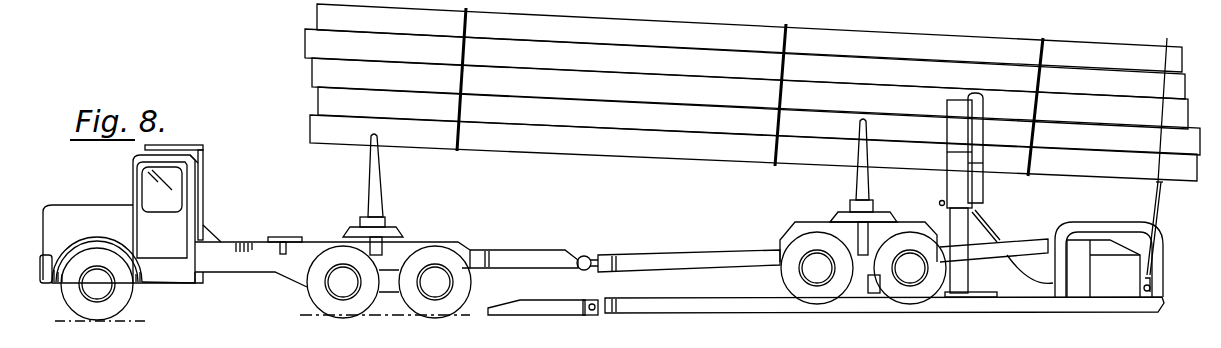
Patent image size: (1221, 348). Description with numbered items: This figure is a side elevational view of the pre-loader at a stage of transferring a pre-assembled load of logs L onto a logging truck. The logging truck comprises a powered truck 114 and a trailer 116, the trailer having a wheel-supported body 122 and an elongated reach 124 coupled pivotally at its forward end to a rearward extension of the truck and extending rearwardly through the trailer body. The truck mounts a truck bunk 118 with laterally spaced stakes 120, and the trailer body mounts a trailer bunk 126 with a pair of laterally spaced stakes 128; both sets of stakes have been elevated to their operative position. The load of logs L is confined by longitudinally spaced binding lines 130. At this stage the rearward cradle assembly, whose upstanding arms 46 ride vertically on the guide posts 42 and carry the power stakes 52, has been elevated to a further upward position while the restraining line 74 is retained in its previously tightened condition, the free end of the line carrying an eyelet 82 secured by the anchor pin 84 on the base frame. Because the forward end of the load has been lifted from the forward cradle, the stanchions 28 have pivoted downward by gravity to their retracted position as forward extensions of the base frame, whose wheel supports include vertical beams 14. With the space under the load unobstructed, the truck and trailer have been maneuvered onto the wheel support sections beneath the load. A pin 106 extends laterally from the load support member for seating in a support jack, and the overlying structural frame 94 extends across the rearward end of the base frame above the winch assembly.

The load of logs L is at (975, 73).
The powered truck 114 is at (234, 208).
The truck bunk 118 is at (350, 228).
The stakes 120 is at (383, 180).
The reach 124 is at (672, 262).
The stanchions 28 is at (558, 302).
The vertical beams 14 is at (690, 301).
The binding lines 130 is at (775, 165).
The trailer 116 is at (762, 225).
The wheel-supported body 122 is at (780, 238).
The trailer bunk 126 is at (838, 215).
The stakes 128 is at (858, 180).
The pin 106 is at (942, 204).
The upstanding arms 46 is at (953, 130).
The stakes 52 is at (980, 116).
The guide posts 42 is at (966, 270).
The structural frame 94 is at (1103, 226).
The restraining line 74 is at (1160, 190).
The eyelet 82 is at (1150, 275).
The anchor pin 84 is at (1152, 288).